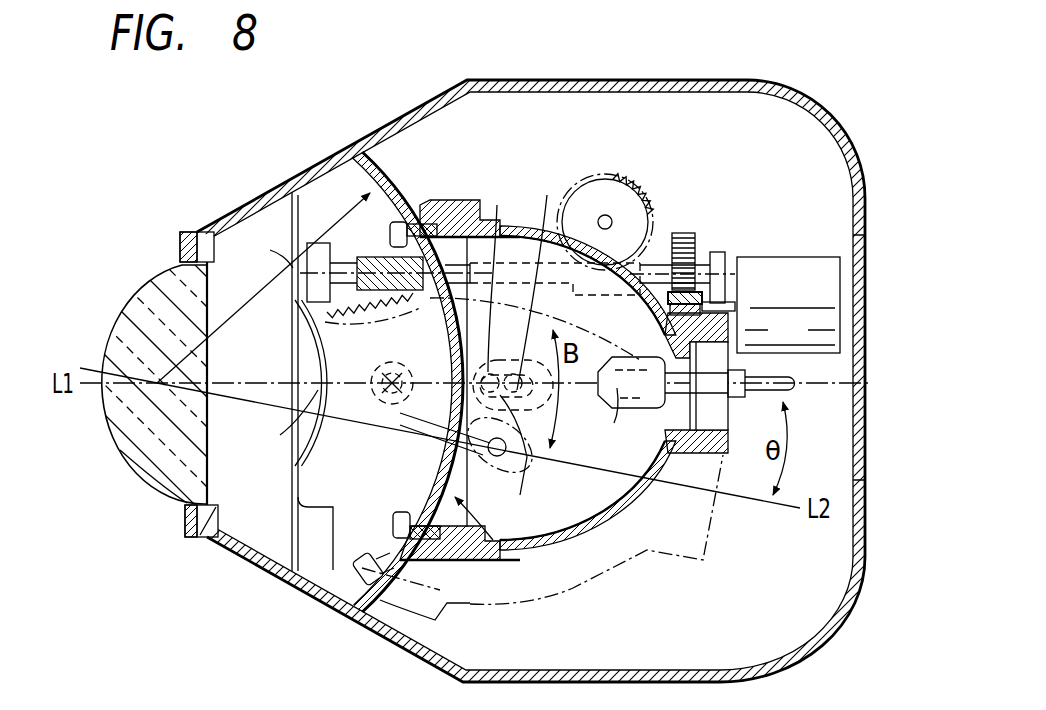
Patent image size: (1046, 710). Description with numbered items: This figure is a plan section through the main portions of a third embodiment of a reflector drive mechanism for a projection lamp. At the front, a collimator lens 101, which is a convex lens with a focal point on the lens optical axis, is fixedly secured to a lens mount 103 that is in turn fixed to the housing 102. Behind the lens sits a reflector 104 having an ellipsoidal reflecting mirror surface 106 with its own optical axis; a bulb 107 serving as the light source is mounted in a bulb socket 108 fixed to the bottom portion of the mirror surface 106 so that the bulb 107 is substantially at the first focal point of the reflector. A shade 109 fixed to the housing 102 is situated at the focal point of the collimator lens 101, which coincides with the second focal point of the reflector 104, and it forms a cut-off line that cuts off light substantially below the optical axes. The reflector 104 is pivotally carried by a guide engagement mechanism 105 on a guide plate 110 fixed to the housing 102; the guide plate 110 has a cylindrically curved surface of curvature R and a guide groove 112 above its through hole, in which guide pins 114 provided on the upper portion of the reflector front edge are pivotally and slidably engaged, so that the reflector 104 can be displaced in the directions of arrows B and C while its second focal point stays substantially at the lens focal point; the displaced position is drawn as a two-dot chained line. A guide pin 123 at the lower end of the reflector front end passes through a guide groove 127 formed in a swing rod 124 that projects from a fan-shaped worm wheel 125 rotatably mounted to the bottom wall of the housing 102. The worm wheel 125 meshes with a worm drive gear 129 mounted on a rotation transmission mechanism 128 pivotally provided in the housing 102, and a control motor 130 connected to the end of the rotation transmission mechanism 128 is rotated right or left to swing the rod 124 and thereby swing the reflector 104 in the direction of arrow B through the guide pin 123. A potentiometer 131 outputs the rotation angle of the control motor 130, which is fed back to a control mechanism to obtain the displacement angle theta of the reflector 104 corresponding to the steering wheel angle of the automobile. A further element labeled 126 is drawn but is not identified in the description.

The collimator lens 101 is at (118, 433).
The housing 102 is at (577, 80).
The lens mount 103 is at (205, 537).
The reflector 104 is at (597, 514).
The guide engagement mechanism 105 is at (488, 545).
The ellipsoidal reflecting mirror surface 106 is at (624, 466).
The bulb 107 is at (645, 357).
The bulb socket 108 is at (715, 357).
The shade 109 is at (303, 318).
The guide plate 110 is at (401, 200).
The guide groove 112 is at (398, 622).
The guide pins 114 is at (392, 230).
The guide pin 123 is at (607, 540).
The swing rod 124 is at (385, 398).
The fan-shaped worm wheel 125 is at (297, 297).
The lever arm 126 is at (547, 195).
The guide groove 127 is at (497, 205).
The rotation transmission mechanism 128 is at (703, 242).
The worm drive gear 129 is at (290, 197).
The control motor 130 is at (808, 258).
The potentiometer 131 is at (604, 200).